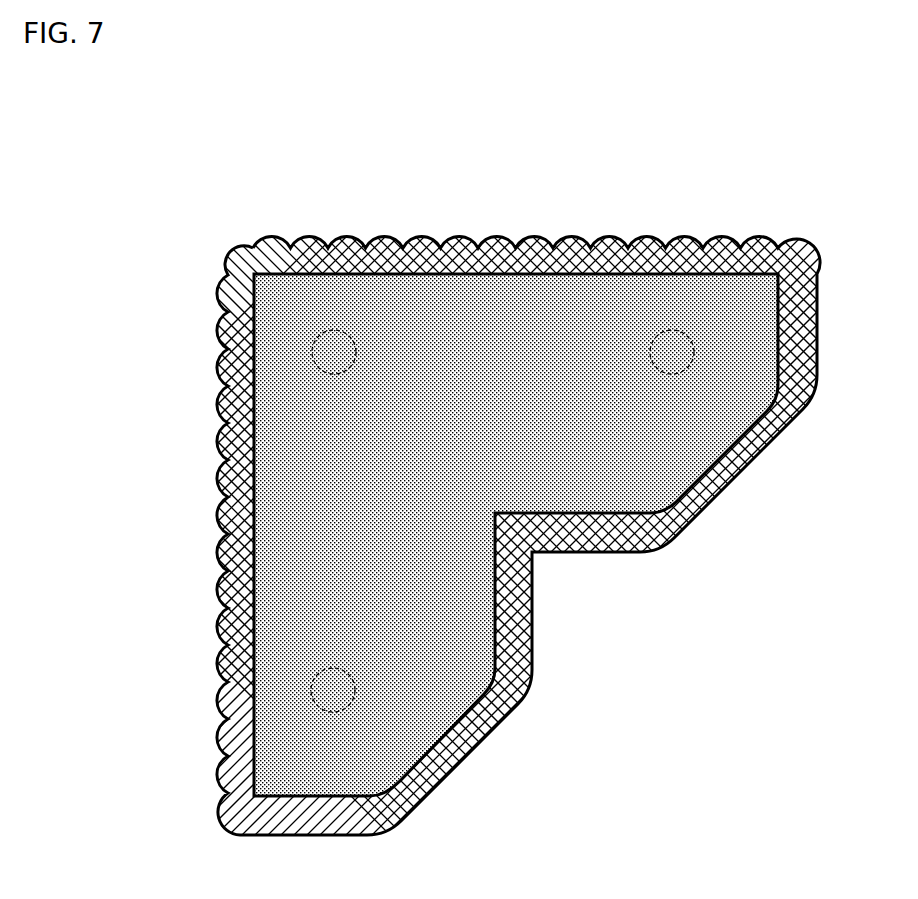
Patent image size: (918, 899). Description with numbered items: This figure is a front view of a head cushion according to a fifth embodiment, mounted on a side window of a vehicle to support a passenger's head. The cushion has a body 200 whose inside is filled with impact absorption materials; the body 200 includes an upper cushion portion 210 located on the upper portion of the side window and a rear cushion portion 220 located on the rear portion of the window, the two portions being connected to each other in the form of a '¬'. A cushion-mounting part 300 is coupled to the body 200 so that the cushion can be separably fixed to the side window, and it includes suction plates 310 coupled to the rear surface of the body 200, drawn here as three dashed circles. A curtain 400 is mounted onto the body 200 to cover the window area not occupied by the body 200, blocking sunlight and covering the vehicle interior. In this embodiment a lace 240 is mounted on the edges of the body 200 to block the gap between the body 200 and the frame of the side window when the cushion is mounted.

The body 200 is at (462, 262).
The upper cushion portion 210 is at (573, 298).
The rear cushion portion 220 is at (290, 622).
The lace 240 is at (225, 475).
The cushion-mounting part 300 is at (377, 443).
The suction plates 310 is at (334, 330).
The curtain 400 is at (629, 562).